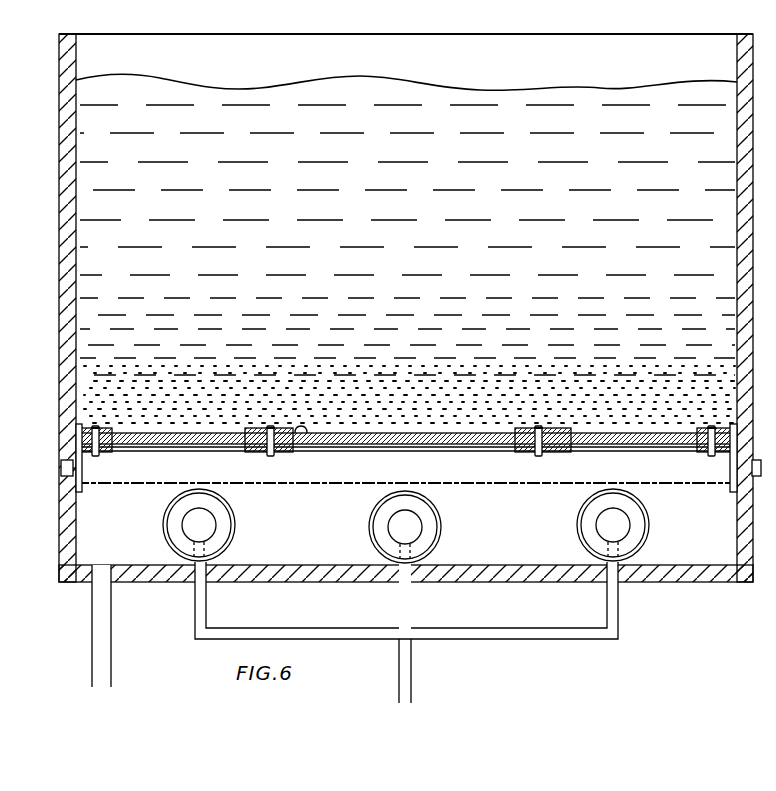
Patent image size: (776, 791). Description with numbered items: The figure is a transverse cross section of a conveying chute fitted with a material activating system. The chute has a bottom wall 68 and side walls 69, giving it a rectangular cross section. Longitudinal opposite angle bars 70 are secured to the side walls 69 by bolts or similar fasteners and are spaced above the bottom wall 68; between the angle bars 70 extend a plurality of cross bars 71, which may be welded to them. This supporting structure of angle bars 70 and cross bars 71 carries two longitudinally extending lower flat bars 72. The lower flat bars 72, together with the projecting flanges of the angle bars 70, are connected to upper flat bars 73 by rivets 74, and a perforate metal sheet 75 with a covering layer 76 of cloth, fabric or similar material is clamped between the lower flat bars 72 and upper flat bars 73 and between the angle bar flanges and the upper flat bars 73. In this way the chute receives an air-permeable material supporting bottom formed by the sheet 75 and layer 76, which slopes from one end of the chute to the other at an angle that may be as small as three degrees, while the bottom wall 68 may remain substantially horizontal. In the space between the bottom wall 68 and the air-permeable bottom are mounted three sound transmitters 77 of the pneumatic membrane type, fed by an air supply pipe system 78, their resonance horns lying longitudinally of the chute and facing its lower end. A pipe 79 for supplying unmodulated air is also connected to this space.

The bottom wall 68 is at (683, 582).
The side walls 69 is at (62, 190).
The angle bars 70 is at (82, 492).
The cross bars 71 is at (548, 484).
The lower flat bars 72 is at (246, 452).
The upper flat bars 73 is at (80, 428).
The rivets 74 is at (78, 442).
The perforate metal sheet 75 is at (418, 448).
The layer of cloth 76 is at (398, 440).
The sound transmitters 77 is at (224, 516).
The air supply pipe system 78 is at (560, 640).
The pipe 79 is at (110, 661).